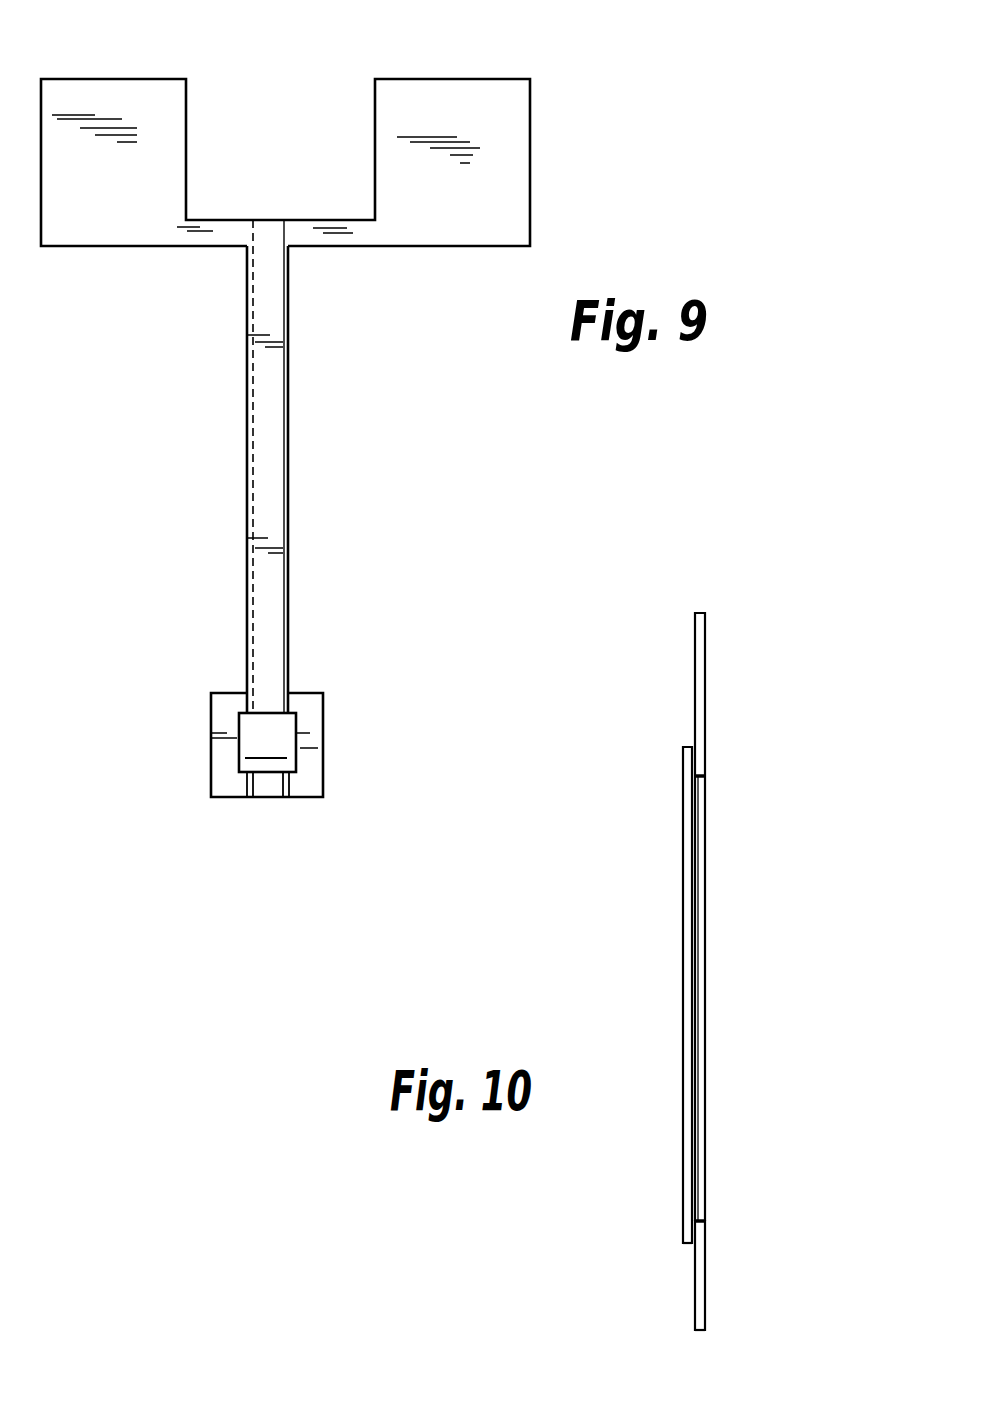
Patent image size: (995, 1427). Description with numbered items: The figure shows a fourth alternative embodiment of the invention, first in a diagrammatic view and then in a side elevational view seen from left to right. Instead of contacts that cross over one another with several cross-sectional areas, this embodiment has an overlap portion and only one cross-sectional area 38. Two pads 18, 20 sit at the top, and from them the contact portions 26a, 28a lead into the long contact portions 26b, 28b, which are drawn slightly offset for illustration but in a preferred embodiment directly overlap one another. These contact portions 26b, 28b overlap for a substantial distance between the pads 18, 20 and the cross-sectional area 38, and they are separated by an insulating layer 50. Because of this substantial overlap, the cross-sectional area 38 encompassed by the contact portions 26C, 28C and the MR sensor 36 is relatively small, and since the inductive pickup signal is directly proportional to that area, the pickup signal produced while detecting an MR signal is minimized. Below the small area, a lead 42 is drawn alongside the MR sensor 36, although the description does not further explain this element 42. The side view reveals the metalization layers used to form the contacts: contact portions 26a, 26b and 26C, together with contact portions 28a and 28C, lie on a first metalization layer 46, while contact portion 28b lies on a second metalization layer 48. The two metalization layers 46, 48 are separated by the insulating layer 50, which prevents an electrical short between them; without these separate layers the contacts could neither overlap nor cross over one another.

In FIG. 9, the pad 18 is at (92, 88).
In FIG. 10, the pad 18 is at (705, 675).
In FIG. 9, the pad 20 is at (473, 88).
In FIG. 9, the contact portion 26a is at (183, 238).
In FIG. 9, the contact portion 28a is at (373, 235).
In FIG. 9, the contact portion 26b is at (248, 435).
In FIG. 10, the contact portion 26b is at (702, 827).
In FIG. 9, the contact portion 28b is at (290, 443).
In FIG. 10, the contact portion 28b is at (687, 1065).
In FIG. 9, the contact portion 26C is at (211, 718).
In FIG. 10, the contact portion 26C is at (705, 1282).
In FIG. 9, the contact portion 28C is at (312, 712).
In FIG. 9, the cross-sectional area 38 is at (267, 742).
In FIG. 9, the first outlet tube 42 is at (252, 802).
In FIG. 9, the MR sensor 36 is at (268, 793).
In FIG. 10, the insulating layer 50 is at (693, 955).
In FIG. 10, the second metalization layer 48 is at (688, 1245).
In FIG. 10, the first metalization layer 46 is at (700, 1332).